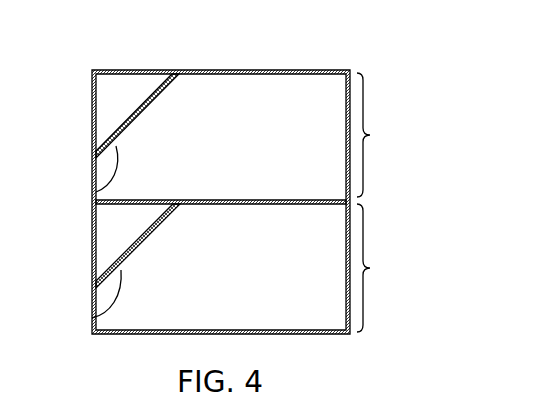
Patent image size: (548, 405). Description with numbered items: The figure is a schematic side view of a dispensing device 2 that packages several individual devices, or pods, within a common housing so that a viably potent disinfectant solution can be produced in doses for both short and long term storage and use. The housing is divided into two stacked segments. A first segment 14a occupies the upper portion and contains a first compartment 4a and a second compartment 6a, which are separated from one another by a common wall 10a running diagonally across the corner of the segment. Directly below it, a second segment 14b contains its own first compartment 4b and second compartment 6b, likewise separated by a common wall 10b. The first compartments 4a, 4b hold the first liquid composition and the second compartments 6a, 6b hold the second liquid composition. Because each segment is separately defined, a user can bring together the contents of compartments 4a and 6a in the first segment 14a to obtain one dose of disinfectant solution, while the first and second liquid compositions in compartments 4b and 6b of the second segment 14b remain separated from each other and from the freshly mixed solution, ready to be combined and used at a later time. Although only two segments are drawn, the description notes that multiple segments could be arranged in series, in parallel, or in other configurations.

The dispensing device 2 is at (120, 66).
The first compartment 4a is at (240, 148).
The first compartment 4b is at (245, 280).
The second compartment 6a is at (130, 108).
The second compartment 6b is at (128, 240).
The common wall 10a is at (96, 192).
The common wall 10b is at (92, 318).
The first segment 14a is at (387, 135).
The second segment 14b is at (388, 268).